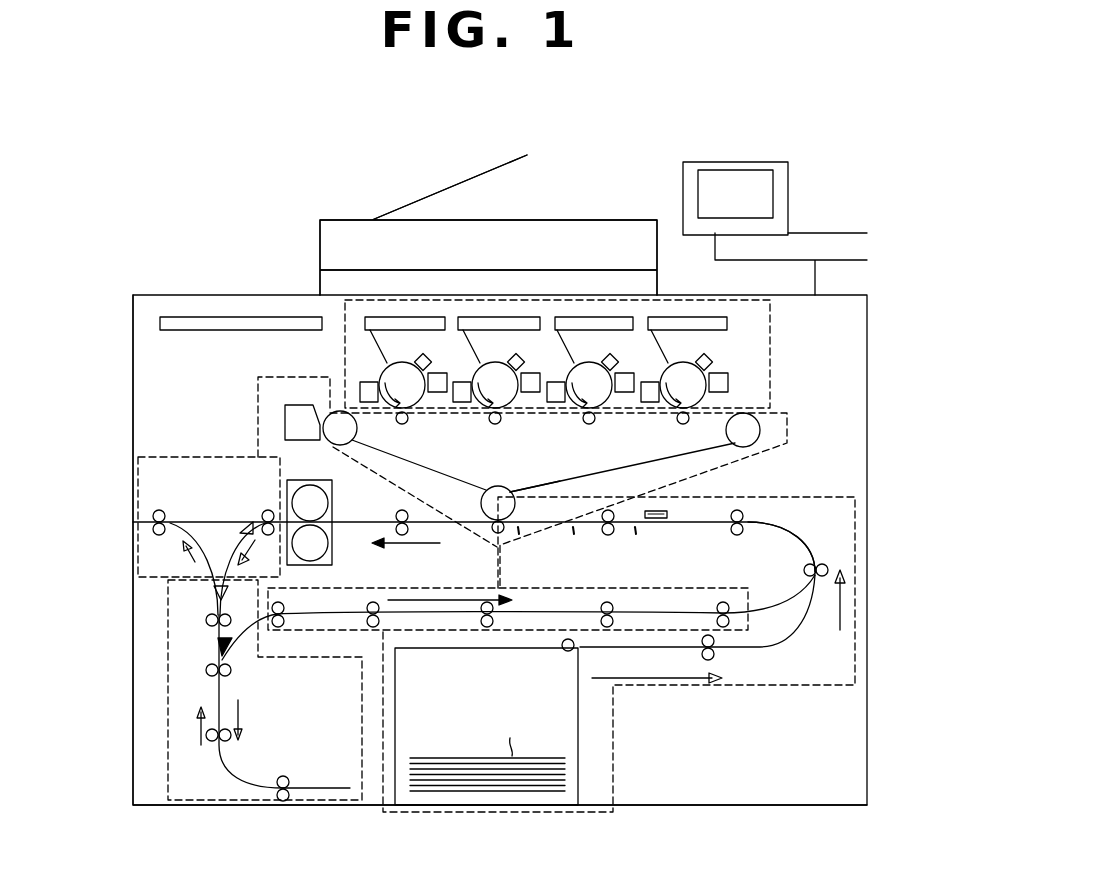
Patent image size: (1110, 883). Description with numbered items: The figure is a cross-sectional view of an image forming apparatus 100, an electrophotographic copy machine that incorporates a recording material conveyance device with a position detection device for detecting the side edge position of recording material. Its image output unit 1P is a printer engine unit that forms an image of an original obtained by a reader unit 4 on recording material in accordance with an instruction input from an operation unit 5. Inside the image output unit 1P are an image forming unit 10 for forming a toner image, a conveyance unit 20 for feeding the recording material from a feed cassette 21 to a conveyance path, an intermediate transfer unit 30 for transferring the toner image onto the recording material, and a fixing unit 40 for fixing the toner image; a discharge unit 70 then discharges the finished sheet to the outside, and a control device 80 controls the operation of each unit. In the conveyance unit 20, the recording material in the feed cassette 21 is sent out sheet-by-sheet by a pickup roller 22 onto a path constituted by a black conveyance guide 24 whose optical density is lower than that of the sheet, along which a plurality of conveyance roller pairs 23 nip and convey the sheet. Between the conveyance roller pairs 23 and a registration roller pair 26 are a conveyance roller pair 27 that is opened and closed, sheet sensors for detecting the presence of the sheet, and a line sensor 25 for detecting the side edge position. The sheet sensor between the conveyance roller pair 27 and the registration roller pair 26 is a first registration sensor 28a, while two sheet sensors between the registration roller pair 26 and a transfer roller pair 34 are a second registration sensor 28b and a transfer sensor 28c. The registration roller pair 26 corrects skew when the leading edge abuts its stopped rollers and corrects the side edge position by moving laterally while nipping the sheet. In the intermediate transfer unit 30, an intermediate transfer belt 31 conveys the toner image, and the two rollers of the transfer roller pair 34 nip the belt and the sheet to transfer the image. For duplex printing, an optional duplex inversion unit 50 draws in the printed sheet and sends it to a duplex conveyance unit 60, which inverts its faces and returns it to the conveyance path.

The image forming apparatus 100 is at (873, 192).
The image output unit 1P is at (133, 405).
The reader unit 4 is at (320, 245).
The operation unit 5 is at (741, 162).
The image forming unit 10 is at (772, 373).
The conveyance unit 20 is at (615, 716).
The feed cassette 21 is at (580, 765).
The pickup roller 22 is at (578, 648).
The conveyance roller pairs 23 is at (815, 562).
The black conveyance guide 24 is at (781, 532).
The line sensor 25 is at (656, 510).
The registration roller pair 26 is at (608, 510).
The conveyance roller pair 27 is at (734, 536).
The first registration sensor 28a is at (635, 528).
The second registration sensor 28b is at (573, 528).
The transfer sensor 28c is at (518, 528).
The intermediate transfer unit 30 is at (790, 432).
The intermediate transfer belt 31 is at (577, 498).
The transfer roller pair 34 is at (494, 488).
The fixing unit 40 is at (285, 480).
The duplex inversion unit 50 is at (165, 652).
The duplex conveyance unit 60 is at (352, 584).
The discharge unit 70 is at (170, 455).
The control device 80 is at (192, 331).